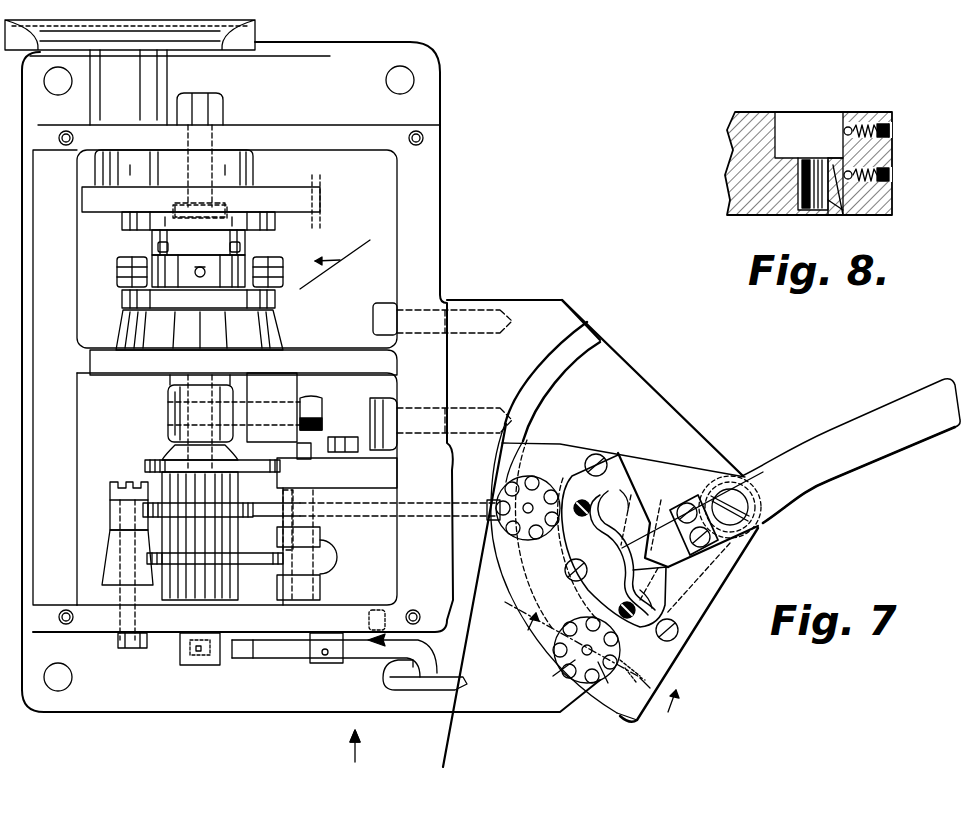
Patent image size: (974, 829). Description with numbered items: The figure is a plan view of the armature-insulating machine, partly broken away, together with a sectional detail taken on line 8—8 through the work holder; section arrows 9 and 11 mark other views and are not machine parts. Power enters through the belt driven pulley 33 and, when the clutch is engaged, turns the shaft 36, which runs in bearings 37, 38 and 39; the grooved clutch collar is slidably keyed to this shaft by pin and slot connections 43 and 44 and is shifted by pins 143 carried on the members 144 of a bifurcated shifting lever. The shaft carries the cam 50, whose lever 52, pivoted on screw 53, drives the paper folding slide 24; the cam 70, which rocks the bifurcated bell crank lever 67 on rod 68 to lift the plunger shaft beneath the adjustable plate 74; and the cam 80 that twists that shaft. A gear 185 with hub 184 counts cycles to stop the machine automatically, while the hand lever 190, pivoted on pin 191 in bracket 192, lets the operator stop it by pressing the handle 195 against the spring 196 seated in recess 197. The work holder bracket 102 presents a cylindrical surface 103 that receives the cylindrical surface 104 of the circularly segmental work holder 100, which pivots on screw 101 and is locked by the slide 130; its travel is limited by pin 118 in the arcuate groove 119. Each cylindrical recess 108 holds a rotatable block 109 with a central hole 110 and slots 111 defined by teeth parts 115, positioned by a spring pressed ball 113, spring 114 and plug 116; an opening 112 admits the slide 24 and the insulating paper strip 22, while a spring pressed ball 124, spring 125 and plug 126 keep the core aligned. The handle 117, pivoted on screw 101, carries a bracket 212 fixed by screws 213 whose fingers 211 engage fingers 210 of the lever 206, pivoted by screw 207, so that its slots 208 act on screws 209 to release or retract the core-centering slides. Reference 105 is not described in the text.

In FIG. 7, the belt driven pulley 33 is at (230, 52).
In FIG. 7, the shaft 36 is at (212, 135).
In FIG. 7, the bearing 37 is at (253, 166).
In FIG. 7, the pins 143 is at (152, 247).
In FIG. 7, the members of the bifurcated shifting lever 144 is at (117, 272).
In FIG. 7, the direction arrow 11 is at (335, 264).
In FIG. 7, the bearing 38 is at (135, 328).
In FIG. 7, the pin and slot connection 43 is at (197, 277).
In FIG. 7, the pin and slot connection 44 is at (202, 277).
In FIG. 7, the hub 184 is at (242, 404).
In FIG. 7, the gear 185 is at (290, 387).
In FIG. 7, the slide 130 is at (380, 440).
In FIG. 7, the rod 68 is at (307, 445).
In FIG. 7, the cam 70 is at (148, 463).
In FIG. 7, the cam 50 is at (245, 510).
In FIG. 7, the paper folding slide 24 is at (272, 508).
In FIG. 7, the cam 80 is at (275, 560).
In FIG. 7, the bifurcated bell crank lever 67 is at (328, 497).
In FIG. 7, the screw 53 is at (117, 480).
In FIG. 7, the lever 52 is at (110, 507).
In FIG. 7, the bearing 39 is at (175, 618).
In FIG. 7, the hand lever 190 is at (362, 657).
In FIG. 7, the pin 191 is at (327, 655).
In FIG. 7, the bracket 192 is at (303, 636).
In FIG. 7, the handle 195 is at (457, 675).
In FIG. 7, the spring 196 is at (385, 640).
In FIG. 7, the recess 197 is at (390, 620).
In FIG. 7, the section arrow 9 is at (364, 746).
In FIG. 7, the insulating paper strip 22 is at (450, 745).
In FIG. 7, the work holder bracket 102 is at (653, 395).
In FIG. 7, the cylindrical surface 103 is at (546, 363).
In FIG. 7, the cylindrical surface 104 is at (535, 432).
In FIG. 7, the housing edge 105 is at (507, 585).
In FIG. 7, the plate 74 is at (557, 447).
In FIG. 7, the work holder 100 is at (707, 590).
In FIG. 7, the screw 101 is at (752, 518).
In FIG. 7, the screws 213 is at (688, 507).
In FIG. 7, the handle 117 is at (918, 392).
In FIG. 7, the pin 118 is at (632, 530).
In FIG. 7, the bracket 212 is at (668, 520).
In FIG. 7, the arcuate groove 119 is at (665, 575).
In FIG. 7, the lever 206 is at (562, 553).
In FIG. 7, the screw 207 is at (566, 585).
In FIG. 7, the fingers 211 is at (601, 537).
In FIG. 7, the fingers 210 is at (612, 505).
In FIG. 7, the screw 209 is at (600, 548).
In FIG. 7, the slots 208 is at (594, 503).
In FIG. 7, the cylindrical recess 108 is at (511, 487).
In FIG. 8, the cylindrical recess 108 is at (823, 122).
In FIG. 7, the rotatable block 109 is at (523, 481).
In FIG. 8, the rotatable block 109 is at (806, 158).
In FIG. 7, the central hole 110 is at (531, 503).
In FIG. 8, the central hole 110 is at (810, 158).
In FIG. 7, the section line 8 is at (603, 672).
In FIG. 7, the opening 112 is at (567, 668).
In FIG. 7, the slots 111 is at (604, 684).
In FIG. 7, the spring pressed ball 113 is at (600, 662).
In FIG. 8, the spring pressed ball 113 is at (849, 178).
In FIG. 7, the plug 116 is at (650, 687).
In FIG. 8, the plug 116 is at (893, 171).
In FIG. 7, the spring 114 is at (633, 718).
In FIG. 8, the spring pressed ball 124 is at (846, 122).
In FIG. 8, the spring 125 is at (876, 118).
In FIG. 8, the plug 126 is at (892, 123).
In FIG. 8, the teeth parts 115 is at (830, 213).